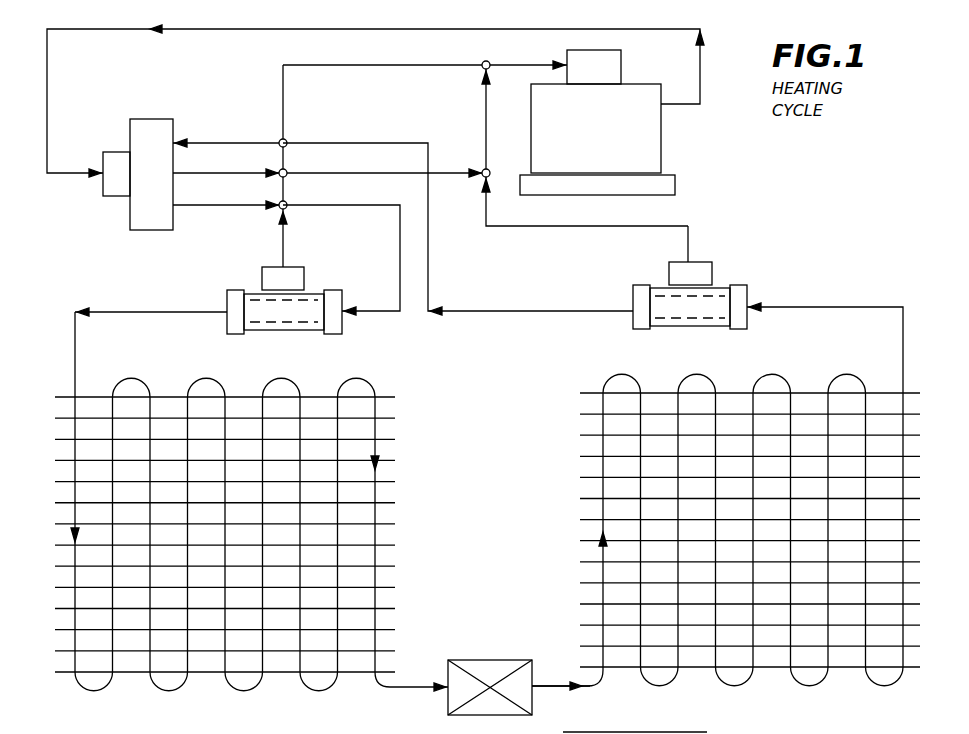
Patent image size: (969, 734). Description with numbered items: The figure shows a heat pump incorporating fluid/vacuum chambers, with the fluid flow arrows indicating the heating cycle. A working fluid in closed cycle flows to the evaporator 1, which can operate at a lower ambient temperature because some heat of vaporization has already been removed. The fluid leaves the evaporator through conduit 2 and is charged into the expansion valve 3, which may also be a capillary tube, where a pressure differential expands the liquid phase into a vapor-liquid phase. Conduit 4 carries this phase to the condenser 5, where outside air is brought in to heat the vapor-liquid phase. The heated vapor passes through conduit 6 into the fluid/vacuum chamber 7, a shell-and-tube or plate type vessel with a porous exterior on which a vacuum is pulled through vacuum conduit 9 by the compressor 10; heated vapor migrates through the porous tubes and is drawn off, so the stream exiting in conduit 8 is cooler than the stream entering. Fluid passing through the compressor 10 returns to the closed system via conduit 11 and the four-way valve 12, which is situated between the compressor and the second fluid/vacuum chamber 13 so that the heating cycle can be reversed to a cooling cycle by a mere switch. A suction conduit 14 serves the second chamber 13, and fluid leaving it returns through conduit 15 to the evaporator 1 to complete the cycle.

The evaporator 1 is at (307, 376).
The conduit 2 is at (410, 688).
The expansion valve 3 is at (507, 668).
The conduit 4 is at (552, 689).
The condenser 5 is at (794, 374).
The conduit 6 is at (903, 352).
The fluid/vacuum chamber 7 is at (724, 285).
The conduit 8 is at (540, 309).
The vacuum conduit 9 is at (688, 236).
The compressor 10 is at (661, 150).
The conduit 11 is at (700, 58).
The four-way valve 12 is at (130, 140).
The second fluid/vacuum chamber 13 is at (343, 292).
The suction conduit 14 is at (283, 120).
The conduit 15 is at (153, 311).